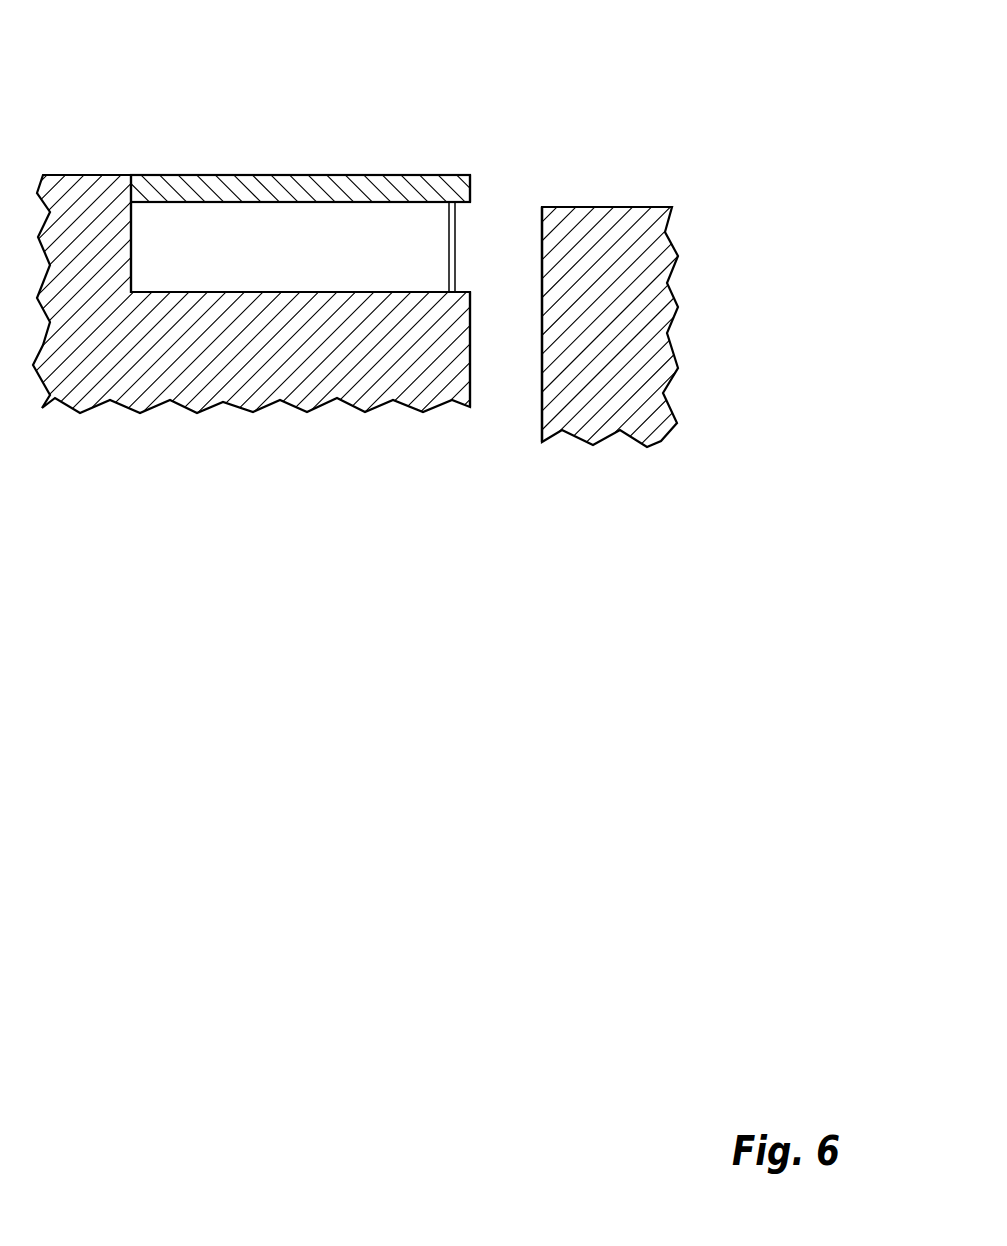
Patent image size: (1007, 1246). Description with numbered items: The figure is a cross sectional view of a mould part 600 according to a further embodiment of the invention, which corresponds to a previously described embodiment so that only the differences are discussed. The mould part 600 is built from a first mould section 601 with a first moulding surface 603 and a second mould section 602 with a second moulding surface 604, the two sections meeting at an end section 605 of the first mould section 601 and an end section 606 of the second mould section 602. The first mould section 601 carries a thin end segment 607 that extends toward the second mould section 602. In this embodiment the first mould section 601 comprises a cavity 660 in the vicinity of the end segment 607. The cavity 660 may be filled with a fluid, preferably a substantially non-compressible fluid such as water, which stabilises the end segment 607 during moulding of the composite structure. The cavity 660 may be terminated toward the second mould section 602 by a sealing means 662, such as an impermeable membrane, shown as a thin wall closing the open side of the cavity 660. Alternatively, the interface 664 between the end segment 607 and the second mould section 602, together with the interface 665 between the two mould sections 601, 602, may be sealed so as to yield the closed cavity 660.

The mould part 600 is at (596, 62).
The first mould section 601 is at (82, 195).
The second mould section 602 is at (633, 227).
The first moulding surface 603 is at (117, 175).
The second moulding surface 604 is at (593, 210).
The end section of first mould section 605 is at (470, 188).
The end section of second mould section 606 is at (528, 204).
The end segment 607 is at (332, 192).
The cavity 660 is at (223, 247).
The sealing means 662 is at (450, 248).
The interface 664 is at (502, 195).
The interface 665 is at (505, 363).